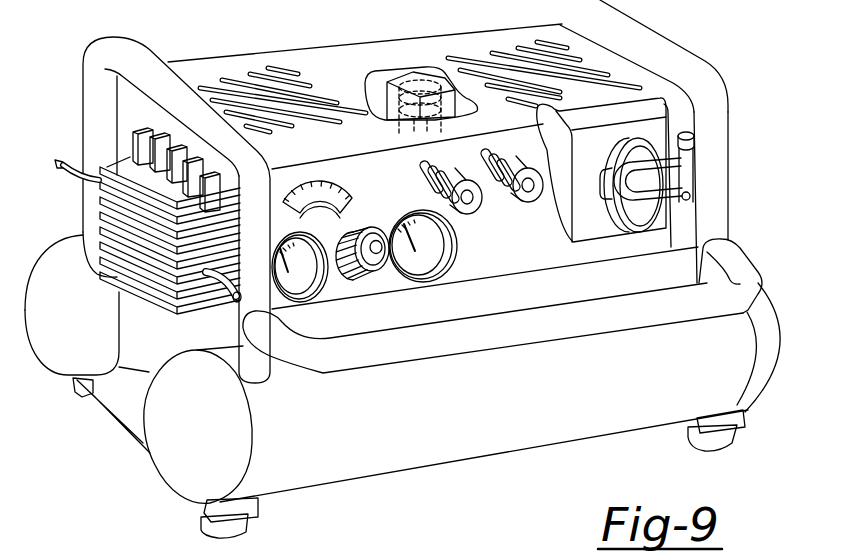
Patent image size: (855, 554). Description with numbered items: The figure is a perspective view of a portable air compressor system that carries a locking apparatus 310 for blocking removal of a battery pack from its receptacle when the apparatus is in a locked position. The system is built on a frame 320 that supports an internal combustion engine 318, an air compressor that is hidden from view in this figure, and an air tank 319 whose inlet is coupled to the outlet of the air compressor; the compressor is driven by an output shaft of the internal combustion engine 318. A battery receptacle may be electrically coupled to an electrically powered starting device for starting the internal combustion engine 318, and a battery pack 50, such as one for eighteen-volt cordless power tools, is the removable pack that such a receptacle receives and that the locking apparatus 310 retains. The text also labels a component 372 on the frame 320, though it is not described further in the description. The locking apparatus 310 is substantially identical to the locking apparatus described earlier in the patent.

The locking apparatus 310 is at (703, 175).
The internal combustion engine 318 is at (113, 213).
The air tank 319 is at (158, 422).
The frame 320 is at (714, 118).
The handle 372 is at (682, 31).
The battery pack 50 is at (636, 228).